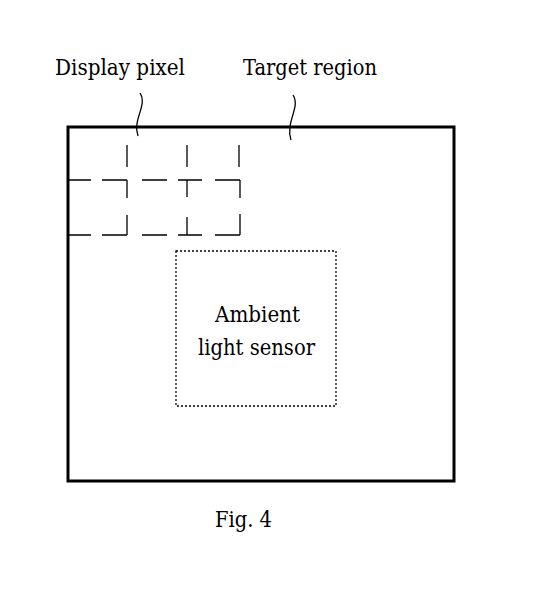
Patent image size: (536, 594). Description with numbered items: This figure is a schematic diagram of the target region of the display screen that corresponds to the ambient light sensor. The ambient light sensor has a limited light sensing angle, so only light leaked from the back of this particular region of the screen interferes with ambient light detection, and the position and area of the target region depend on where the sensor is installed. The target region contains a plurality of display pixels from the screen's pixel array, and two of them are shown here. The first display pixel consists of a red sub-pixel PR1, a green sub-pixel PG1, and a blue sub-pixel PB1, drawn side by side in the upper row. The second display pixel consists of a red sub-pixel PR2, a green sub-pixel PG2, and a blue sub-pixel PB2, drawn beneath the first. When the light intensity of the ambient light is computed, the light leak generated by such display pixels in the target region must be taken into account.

The red sub-pixel PR1 is at (104, 155).
The green sub-pixel PG1 is at (162, 155).
The blue sub-pixel PB1 is at (217, 155).
The red sub-pixel PR2 is at (98, 207).
The green sub-pixel PG2 is at (169, 207).
The blue sub-pixel PB2 is at (217, 207).